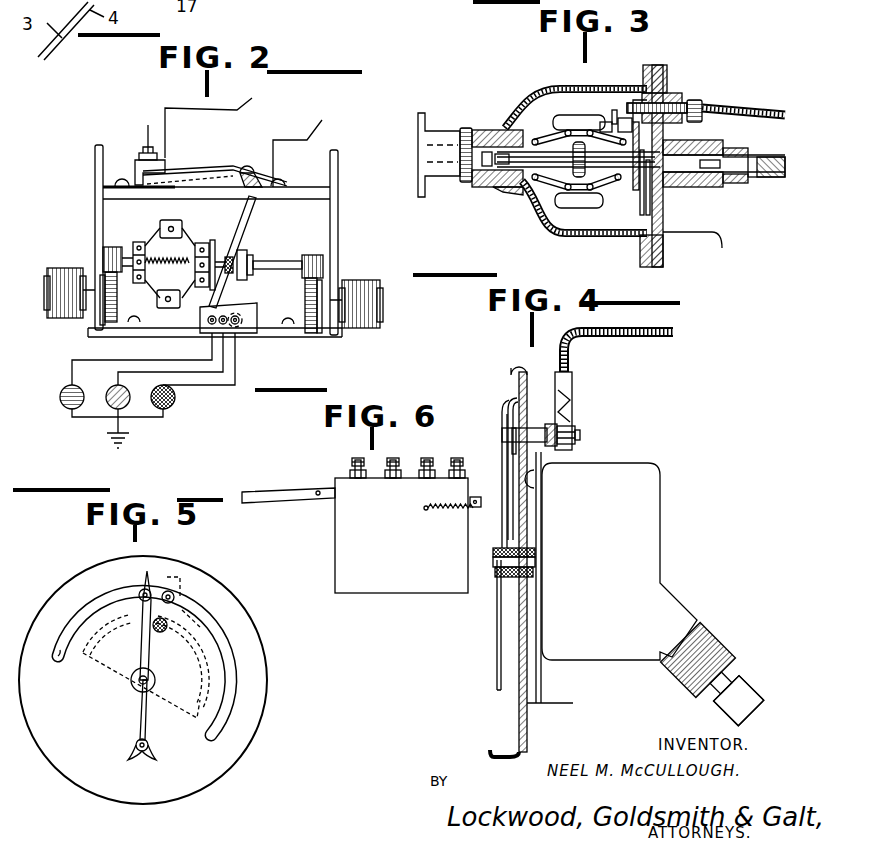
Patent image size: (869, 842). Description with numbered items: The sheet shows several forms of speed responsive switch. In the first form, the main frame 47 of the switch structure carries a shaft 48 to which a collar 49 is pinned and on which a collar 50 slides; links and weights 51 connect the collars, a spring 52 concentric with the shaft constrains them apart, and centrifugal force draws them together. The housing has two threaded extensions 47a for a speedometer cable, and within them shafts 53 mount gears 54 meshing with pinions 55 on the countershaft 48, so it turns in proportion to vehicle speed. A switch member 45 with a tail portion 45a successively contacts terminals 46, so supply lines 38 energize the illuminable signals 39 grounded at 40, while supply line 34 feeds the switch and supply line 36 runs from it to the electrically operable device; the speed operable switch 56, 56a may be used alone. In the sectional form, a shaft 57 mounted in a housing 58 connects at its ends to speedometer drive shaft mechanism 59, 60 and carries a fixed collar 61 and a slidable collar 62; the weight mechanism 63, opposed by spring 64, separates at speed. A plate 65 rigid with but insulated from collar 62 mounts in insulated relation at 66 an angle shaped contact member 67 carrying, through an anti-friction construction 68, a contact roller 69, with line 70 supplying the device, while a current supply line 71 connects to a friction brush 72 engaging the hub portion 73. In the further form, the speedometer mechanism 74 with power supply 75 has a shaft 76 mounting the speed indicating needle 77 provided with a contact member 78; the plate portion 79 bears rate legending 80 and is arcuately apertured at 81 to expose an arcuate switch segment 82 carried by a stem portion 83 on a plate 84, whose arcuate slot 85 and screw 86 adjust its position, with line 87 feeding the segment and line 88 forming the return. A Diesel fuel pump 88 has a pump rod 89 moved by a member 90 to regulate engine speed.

In FIG. 2, the supply line 34 is at (310, 146).
In FIG. 2, the supply line 36 is at (221, 121).
In FIG. 2, the supply lines 38 is at (228, 378).
In FIG. 2, the illuminable signals 39 is at (174, 402).
In FIG. 2, the ground 40 is at (127, 430).
In FIG. 2, the switch member 45 is at (243, 236).
In FIG. 2, the tail portion 45a is at (233, 314).
In FIG. 2, the terminals 46 is at (240, 318).
In FIG. 2, the main frame 47 is at (95, 190).
In FIG. 2, the threaded extensions 47a is at (372, 270).
In FIG. 2, the shaft 48 is at (280, 261).
In FIG. 2, the collar 49 is at (135, 243).
In FIG. 2, the collar 50 is at (209, 248).
In FIG. 2, the links and weights 51 is at (171, 224).
In FIG. 2, the spring 52 is at (160, 286).
In FIG. 2, the shafts 53 is at (103, 298).
In FIG. 2, the gears 54 is at (112, 322).
In FIG. 2, the pinions 55 is at (106, 247).
In FIG. 2, the speed operable switch 56 is at (192, 170).
In FIG. 2, the speed operable switch 56a is at (149, 125).
In FIG. 3, the shaft 57 is at (535, 182).
In FIG. 3, the housing 58 is at (560, 237).
In FIG. 3, the speedometer drive shaft mechanism 59 is at (737, 187).
In FIG. 3, the speedometer drive shaft mechanism 60 is at (482, 186).
In FIG. 3, the fixed collar 61 is at (517, 125).
In FIG. 3, the slidable collar 62 is at (630, 150).
In FIG. 3, the weight mechanism 63 is at (565, 114).
In FIG. 3, the spring 64 is at (548, 185).
In FIG. 3, the plate 65 is at (637, 122).
In FIG. 3, the insulated mounting 66 is at (670, 93).
In FIG. 3, the angle shaped contact member 67 is at (624, 118).
In FIG. 3, the anti-friction construction 68 is at (613, 110).
In FIG. 3, the contact roller 69 is at (600, 122).
In FIG. 3, the line 70 is at (758, 112).
In FIG. 3, the current supply line 71 is at (692, 167).
In FIG. 3, the friction brush 72 is at (647, 215).
In FIG. 3, the hub portion 73 is at (668, 139).
In FIG. 4, the speedometer mechanism 74 is at (657, 524).
In FIG. 4, the power supply 75 is at (735, 685).
In FIG. 4, the shaft 76 is at (493, 565).
In FIG. 5, the shaft 76 is at (138, 688).
In FIG. 4, the speed indicating needle 77 is at (502, 492).
In FIG. 5, the speed indicating needle 77 is at (144, 651).
In FIG. 4, the contact member 78 is at (505, 428).
In FIG. 5, the contact member 78 is at (143, 593).
In FIG. 4, the plate portion 79 is at (512, 377).
In FIG. 5, the rate legending 80 is at (213, 583).
In FIG. 5, the arcuate aperture 81 is at (217, 627).
In FIG. 4, the arcuate switch segment 82 is at (512, 441).
In FIG. 5, the arcuate switch segment 82 is at (200, 607).
In FIG. 4, the stem portion 83 is at (540, 428).
In FIG. 5, the stem portion 83 is at (172, 593).
In FIG. 4, the plate 84 is at (541, 526).
In FIG. 5, the plate 84 is at (100, 684).
In FIG. 5, the arcuate slot 85 is at (80, 660).
In FIG. 4, the screw 86 is at (540, 490).
In FIG. 5, the screw 86 is at (163, 633).
In FIG. 4, the line 87 is at (625, 338).
In FIG. 4, the line 88 is at (550, 688).
In FIG. 6, the line 88 is at (382, 580).
In FIG. 6, the pump rod 89 is at (325, 488).
In FIG. 6, the member 90 is at (270, 490).